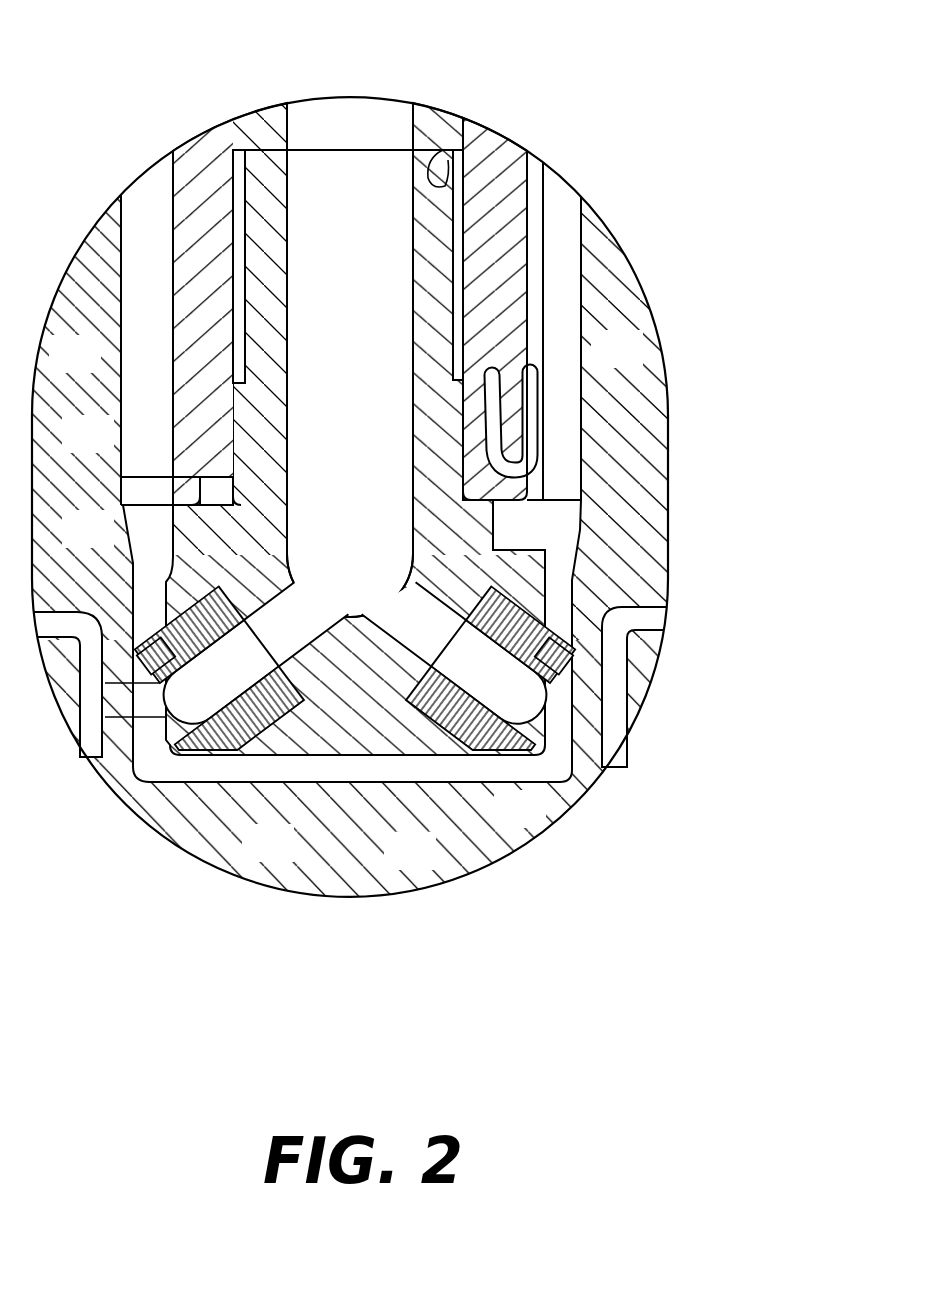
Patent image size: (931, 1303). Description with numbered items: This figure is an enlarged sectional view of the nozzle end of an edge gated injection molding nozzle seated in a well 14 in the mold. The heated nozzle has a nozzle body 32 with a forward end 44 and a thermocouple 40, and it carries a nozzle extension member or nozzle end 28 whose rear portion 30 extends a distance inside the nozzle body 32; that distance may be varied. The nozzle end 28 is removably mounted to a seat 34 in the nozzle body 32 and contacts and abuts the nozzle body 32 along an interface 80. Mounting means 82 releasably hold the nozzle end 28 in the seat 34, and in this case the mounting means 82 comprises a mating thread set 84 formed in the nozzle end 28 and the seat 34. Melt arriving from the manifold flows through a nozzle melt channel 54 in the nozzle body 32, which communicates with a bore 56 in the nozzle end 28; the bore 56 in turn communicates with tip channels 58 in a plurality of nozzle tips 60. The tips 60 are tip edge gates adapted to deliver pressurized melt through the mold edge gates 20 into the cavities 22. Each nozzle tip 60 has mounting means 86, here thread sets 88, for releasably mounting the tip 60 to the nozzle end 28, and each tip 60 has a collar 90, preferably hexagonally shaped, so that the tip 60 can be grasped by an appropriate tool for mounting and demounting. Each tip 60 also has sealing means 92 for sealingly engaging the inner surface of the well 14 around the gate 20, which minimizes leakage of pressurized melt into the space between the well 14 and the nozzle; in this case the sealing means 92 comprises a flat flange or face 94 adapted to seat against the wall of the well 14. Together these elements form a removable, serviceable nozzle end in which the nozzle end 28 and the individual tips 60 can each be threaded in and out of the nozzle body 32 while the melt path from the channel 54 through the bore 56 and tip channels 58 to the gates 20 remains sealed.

The well 14 is at (93, 757).
The edge gate 20 is at (587, 700).
The cavity 22 is at (613, 663).
The nozzle end 28 is at (433, 397).
The rear portion 30 is at (243, 452).
The nozzle body 32 is at (495, 213).
The seat 34 is at (227, 188).
The thermocouple 40 is at (530, 307).
The forward end 44 is at (173, 477).
The nozzle melt channel 54 is at (340, 125).
The bore 56 is at (336, 516).
The tip channel 58 is at (160, 752).
The nozzle tip 60 is at (167, 765).
The interface 80 is at (443, 148).
The mounting means 82 is at (485, 188).
The mating thread set 84 is at (560, 192).
The mounting means 86 is at (257, 782).
The thread set 88 is at (133, 560).
The collar 90 is at (455, 778).
The sealing means 92 is at (630, 607).
The flat flange or face 94 is at (699, 656).